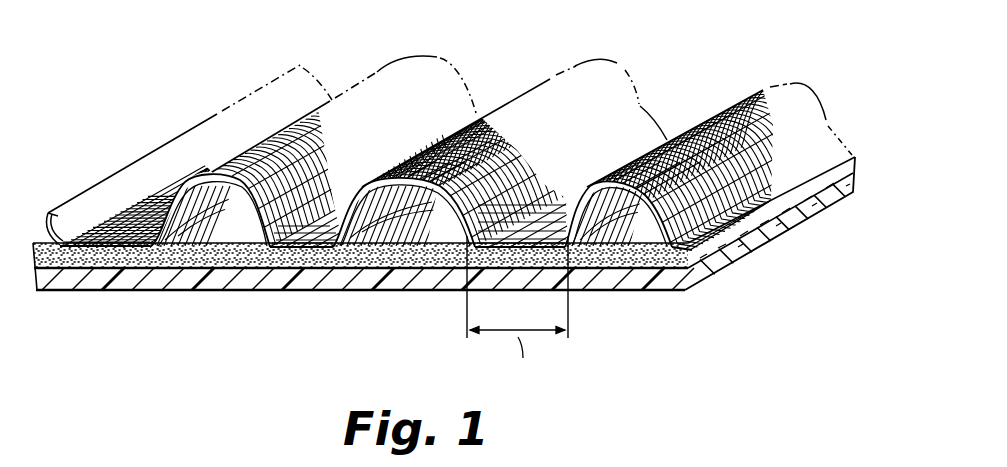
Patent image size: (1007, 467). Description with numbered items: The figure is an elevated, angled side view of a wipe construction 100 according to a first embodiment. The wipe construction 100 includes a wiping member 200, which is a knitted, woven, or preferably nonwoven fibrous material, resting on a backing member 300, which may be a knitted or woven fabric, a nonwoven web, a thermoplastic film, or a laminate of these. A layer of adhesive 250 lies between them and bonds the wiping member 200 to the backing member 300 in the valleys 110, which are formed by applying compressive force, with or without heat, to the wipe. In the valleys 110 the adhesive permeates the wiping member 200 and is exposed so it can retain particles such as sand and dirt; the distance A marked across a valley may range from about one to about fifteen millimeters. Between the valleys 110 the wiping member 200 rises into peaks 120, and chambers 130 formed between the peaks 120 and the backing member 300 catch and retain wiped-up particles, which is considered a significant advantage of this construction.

The wipe construction 100 is at (750, 50).
The wiping member 200 is at (458, 194).
The peaks 120 is at (239, 184).
The valleys 110 is at (277, 251).
The chambers 130 is at (213, 217).
The adhesive layer 250 is at (637, 258).
The backing member 300 is at (97, 283).